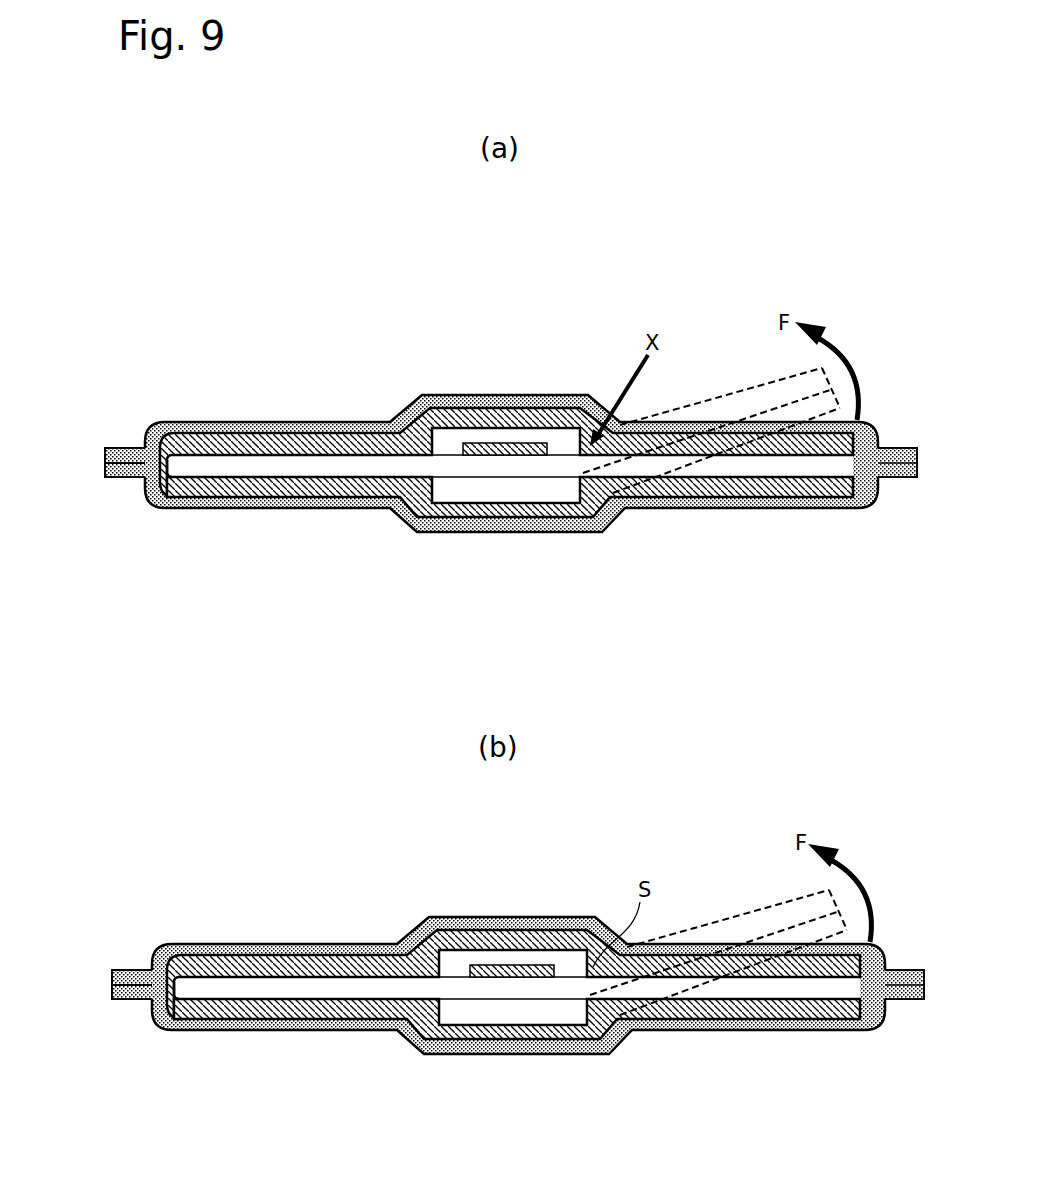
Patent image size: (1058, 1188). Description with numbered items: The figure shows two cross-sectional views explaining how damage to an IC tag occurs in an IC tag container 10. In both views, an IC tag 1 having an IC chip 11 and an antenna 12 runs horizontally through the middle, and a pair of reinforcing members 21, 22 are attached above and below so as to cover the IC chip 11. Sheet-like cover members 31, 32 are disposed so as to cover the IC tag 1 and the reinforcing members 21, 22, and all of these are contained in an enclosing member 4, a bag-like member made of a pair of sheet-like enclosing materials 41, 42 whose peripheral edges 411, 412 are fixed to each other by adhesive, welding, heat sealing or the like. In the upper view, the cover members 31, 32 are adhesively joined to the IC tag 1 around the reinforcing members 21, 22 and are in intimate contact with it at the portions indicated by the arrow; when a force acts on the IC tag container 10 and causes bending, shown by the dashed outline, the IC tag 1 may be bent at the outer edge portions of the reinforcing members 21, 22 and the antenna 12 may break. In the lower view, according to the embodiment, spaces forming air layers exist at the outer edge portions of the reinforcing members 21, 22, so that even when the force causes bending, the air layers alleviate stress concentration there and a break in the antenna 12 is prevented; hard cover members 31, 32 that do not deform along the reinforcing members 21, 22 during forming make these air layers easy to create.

The IC tag 1 is at (868, 462).
The enclosing member 4 is at (762, 258).
The IC tag container 10 is at (316, 365).
The IC chip 11 is at (497, 452).
The antenna 12 is at (167, 433).
The reinforcing member 21 is at (475, 433).
The reinforcing member 22 is at (545, 492).
The cover member 31 is at (250, 445).
The cover member 32 is at (287, 490).
The enclosing material 41 is at (853, 425).
The enclosing material 42 is at (713, 505).
The peripheral edge 411 is at (120, 457).
The peripheral edge 412 is at (100, 467).